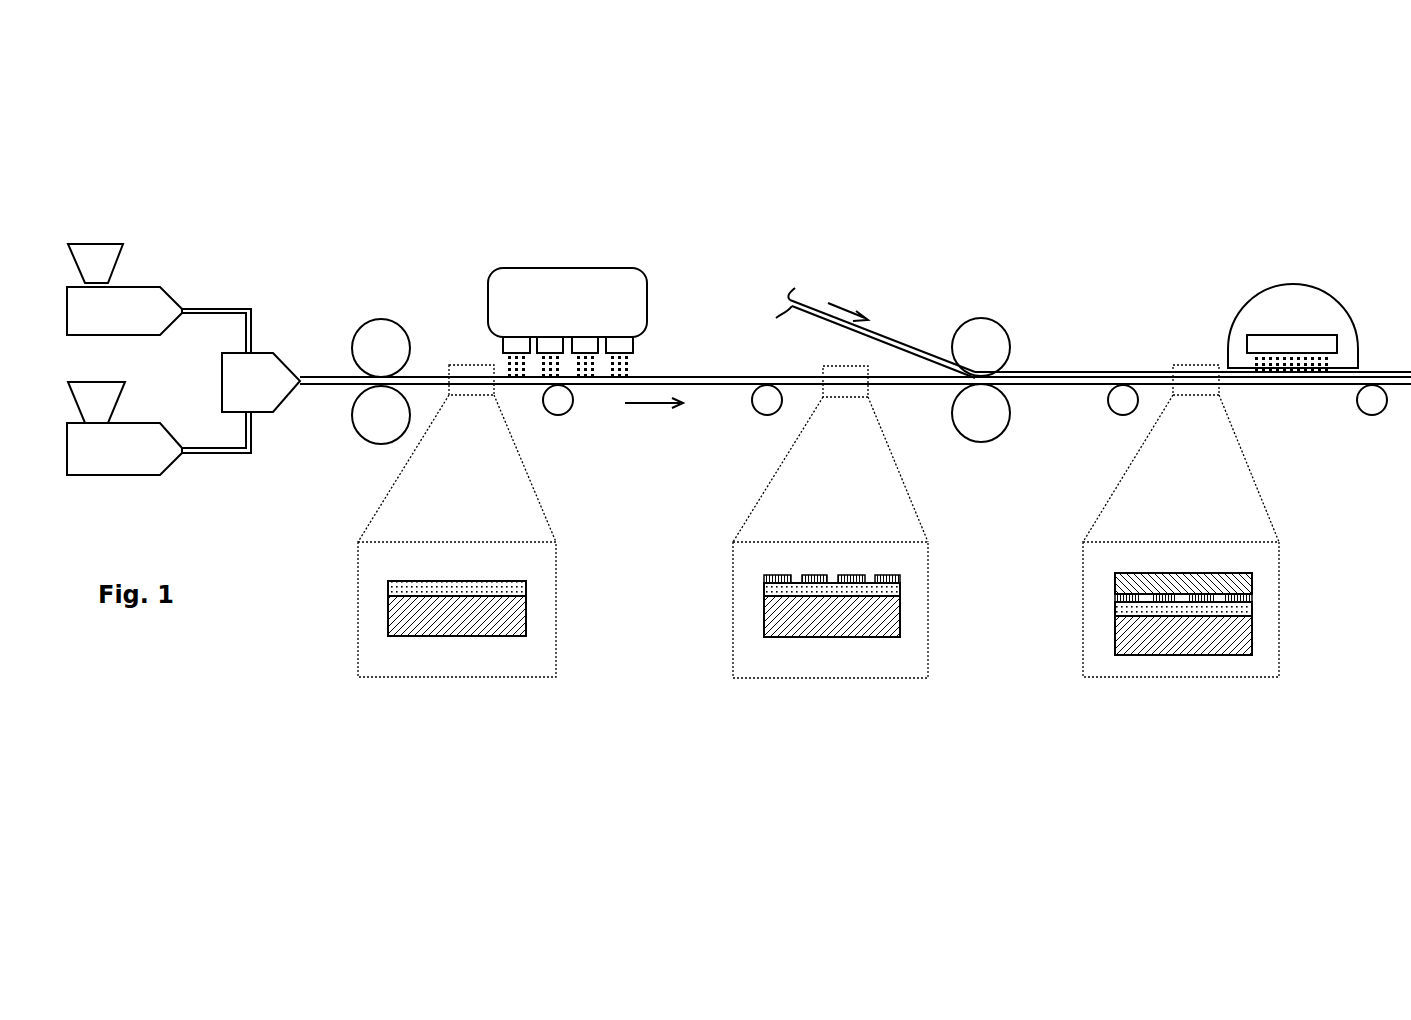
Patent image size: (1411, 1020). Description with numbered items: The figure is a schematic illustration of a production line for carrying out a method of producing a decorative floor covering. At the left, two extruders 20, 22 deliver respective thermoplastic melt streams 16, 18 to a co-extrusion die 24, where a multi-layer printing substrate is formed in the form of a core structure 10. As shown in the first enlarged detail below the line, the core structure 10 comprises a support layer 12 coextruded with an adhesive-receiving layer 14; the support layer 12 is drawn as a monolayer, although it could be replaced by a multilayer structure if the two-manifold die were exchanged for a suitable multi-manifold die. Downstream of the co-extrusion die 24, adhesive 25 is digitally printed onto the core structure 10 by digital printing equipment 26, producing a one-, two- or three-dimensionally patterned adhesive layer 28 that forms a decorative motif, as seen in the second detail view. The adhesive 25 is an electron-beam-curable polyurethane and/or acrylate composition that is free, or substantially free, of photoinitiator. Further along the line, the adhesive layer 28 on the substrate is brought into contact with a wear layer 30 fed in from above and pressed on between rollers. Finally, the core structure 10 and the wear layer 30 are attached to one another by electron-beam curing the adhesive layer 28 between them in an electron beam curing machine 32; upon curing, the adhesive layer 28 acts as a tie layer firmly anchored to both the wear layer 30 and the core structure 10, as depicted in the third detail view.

The core structure 10 is at (335, 398).
The support layer 12 is at (388, 619).
The adhesive-receiving layer 14 is at (388, 588).
The thermoplastic melt stream 16 is at (251, 301).
The thermoplastic melt stream 18 is at (229, 462).
The extruder 20 is at (140, 284).
The extruder 22 is at (140, 422).
The co-extrusion die 24 is at (283, 352).
The adhesive 25 is at (506, 358).
The digital printing equipment 26 is at (668, 333).
The adhesive layer 28 is at (900, 578).
The wear layer 30 is at (889, 334).
The electron beam curing machine 32 is at (1220, 322).